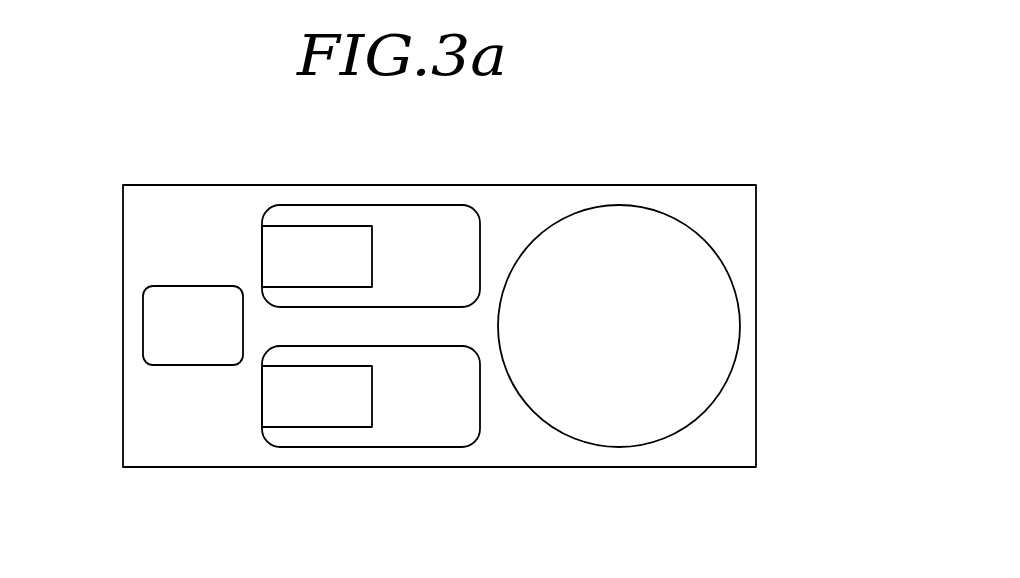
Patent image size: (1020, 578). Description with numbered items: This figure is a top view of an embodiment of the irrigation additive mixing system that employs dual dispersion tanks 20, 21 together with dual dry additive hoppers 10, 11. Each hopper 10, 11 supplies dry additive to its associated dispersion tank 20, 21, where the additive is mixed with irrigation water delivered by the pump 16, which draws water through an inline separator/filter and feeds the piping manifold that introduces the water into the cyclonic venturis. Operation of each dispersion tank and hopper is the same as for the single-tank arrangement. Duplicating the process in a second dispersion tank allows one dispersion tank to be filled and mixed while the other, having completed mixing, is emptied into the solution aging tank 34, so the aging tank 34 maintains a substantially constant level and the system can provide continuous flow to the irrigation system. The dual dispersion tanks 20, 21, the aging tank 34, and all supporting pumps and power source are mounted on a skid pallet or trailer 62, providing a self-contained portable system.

The skid pallet or trailer 62 is at (757, 223).
The second dispersion tank 21 is at (400, 205).
The second dry additive hopper 11 is at (262, 246).
The pump 16 is at (143, 326).
The first dispersion tank 20 is at (303, 447).
The first dry additive hopper 10 is at (262, 407).
The solution aging tank 34 is at (620, 448).